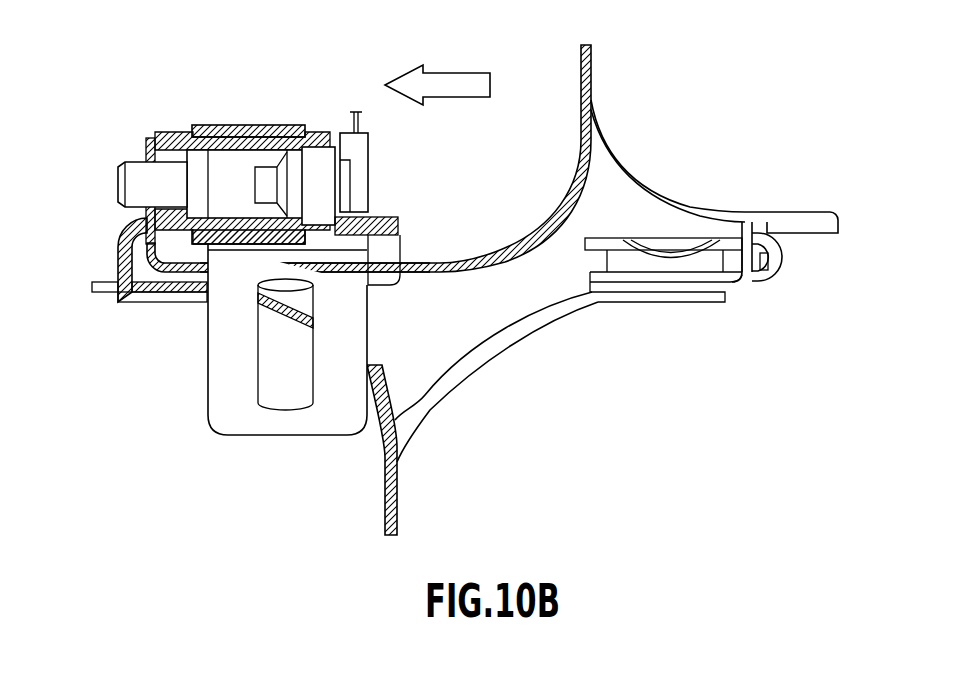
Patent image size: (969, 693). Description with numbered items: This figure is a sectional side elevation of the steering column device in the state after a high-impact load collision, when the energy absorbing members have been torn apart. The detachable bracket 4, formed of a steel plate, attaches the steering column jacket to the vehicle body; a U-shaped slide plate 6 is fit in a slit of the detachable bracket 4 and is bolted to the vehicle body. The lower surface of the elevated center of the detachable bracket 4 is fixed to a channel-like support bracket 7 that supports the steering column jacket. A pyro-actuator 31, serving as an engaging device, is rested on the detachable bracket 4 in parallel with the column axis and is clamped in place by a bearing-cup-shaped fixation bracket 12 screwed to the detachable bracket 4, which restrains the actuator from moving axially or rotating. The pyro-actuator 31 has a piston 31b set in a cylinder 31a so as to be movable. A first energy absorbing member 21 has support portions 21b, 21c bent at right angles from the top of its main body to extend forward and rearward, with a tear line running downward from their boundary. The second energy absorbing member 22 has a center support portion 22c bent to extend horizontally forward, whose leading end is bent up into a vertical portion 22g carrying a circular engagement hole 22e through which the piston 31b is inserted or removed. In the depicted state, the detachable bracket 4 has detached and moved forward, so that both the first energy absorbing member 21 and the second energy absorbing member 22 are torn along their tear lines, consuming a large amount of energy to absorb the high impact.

The detachable bracket 4 is at (118, 243).
The slide plate 6 is at (782, 262).
The support bracket 7 is at (228, 417).
The fixation bracket 12 is at (250, 125).
The first energy absorbing member 21 is at (397, 493).
The support portion 21b is at (180, 298).
The support portion 21c is at (657, 302).
The second energy absorbing member 22 is at (592, 90).
The support portion 22c is at (343, 278).
The engagement hole 22e is at (128, 165).
The vertical portion 22g is at (146, 140).
The pyro-actuator 31 is at (328, 120).
The cylinder 31a is at (275, 150).
The piston 31b is at (168, 185).